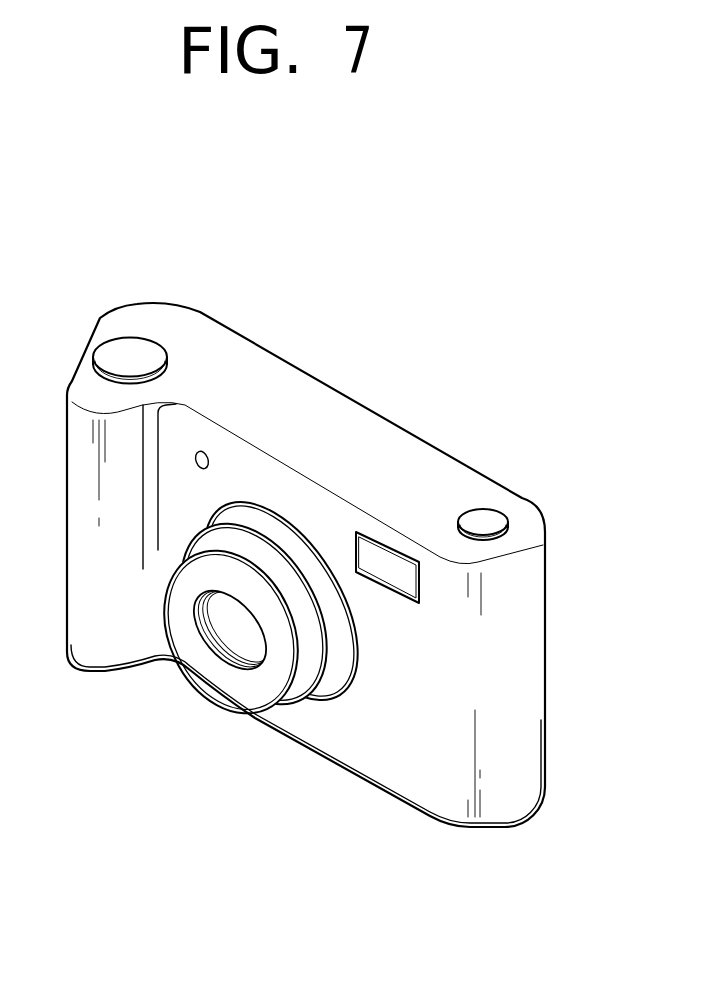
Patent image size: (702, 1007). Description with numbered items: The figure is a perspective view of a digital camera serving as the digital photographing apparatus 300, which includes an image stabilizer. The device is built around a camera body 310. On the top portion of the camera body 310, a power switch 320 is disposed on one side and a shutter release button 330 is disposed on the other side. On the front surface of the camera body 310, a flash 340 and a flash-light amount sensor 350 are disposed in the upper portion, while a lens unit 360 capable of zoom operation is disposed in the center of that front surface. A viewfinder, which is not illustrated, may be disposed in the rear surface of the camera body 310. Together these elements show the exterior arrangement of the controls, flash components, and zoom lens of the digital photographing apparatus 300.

The digital photographing apparatus 300 is at (326, 232).
The camera body 310 is at (422, 760).
The power switch 320 is at (487, 522).
The shutter release button 330 is at (128, 350).
The flash 340 is at (387, 567).
The flash-light amount sensor 350 is at (201, 450).
The lens unit 360 is at (218, 717).